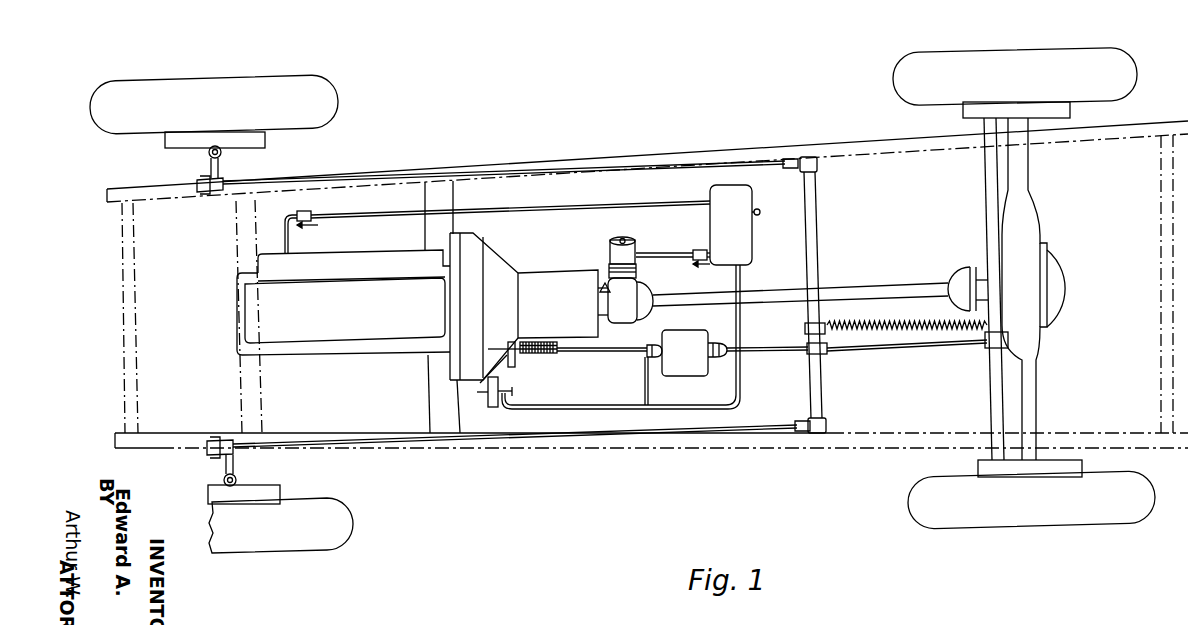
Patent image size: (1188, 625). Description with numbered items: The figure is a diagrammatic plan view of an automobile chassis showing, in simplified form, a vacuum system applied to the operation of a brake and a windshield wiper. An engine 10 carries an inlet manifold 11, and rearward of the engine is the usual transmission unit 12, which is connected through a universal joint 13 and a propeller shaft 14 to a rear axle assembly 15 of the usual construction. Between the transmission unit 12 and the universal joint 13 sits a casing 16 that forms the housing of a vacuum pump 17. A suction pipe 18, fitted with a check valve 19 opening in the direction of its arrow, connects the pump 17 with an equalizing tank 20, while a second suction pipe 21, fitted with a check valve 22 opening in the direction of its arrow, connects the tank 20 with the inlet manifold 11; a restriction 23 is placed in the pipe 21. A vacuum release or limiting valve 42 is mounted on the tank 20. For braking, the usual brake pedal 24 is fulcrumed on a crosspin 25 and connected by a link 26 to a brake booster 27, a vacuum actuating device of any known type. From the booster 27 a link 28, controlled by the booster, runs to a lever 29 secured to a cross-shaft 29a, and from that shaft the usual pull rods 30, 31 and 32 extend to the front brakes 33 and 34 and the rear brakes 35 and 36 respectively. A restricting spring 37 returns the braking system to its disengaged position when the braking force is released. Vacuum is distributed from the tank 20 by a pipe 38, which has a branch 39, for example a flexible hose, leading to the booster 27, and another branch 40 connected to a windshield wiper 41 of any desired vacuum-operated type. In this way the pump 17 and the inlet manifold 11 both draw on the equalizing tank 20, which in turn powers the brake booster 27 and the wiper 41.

The engine 10 is at (255, 316).
The inlet manifold 11 is at (277, 267).
The transmission unit 12 is at (568, 292).
The universal joint 13 is at (648, 298).
The propeller shaft 14 is at (870, 294).
The rear axle assembly 15 is at (1030, 279).
The casing 16 is at (622, 316).
The vacuum pump 17 is at (620, 247).
The suction pipe 18 is at (662, 248).
The check valve 19 is at (698, 252).
The equalizing tank 20 is at (750, 251).
The suction pipe 21 is at (621, 208).
The check valve 22 is at (306, 215).
The restriction 23 is at (283, 243).
The brake pedal 24 is at (537, 354).
The crosspin 25 is at (513, 368).
The link 26 is at (597, 354).
The brake booster 27 is at (690, 365).
The link 28 is at (795, 352).
The lever 29 is at (827, 351).
The cross-shaft 29a is at (813, 233).
The pull rod 30 is at (628, 167).
The pull rod 31 is at (610, 437).
The pull rod 32 is at (950, 350).
The front brake 33 is at (260, 134).
The front brake 34 is at (260, 489).
The rear brake 35 is at (1062, 109).
The rear brake 36 is at (1073, 465).
The restricting spring 37 is at (893, 325).
The pipe 38 is at (742, 388).
The branch 39 is at (647, 383).
The branch 40 is at (572, 408).
The wind-shield wiper 41 is at (490, 409).
The vacuum release valve 42 is at (760, 211).